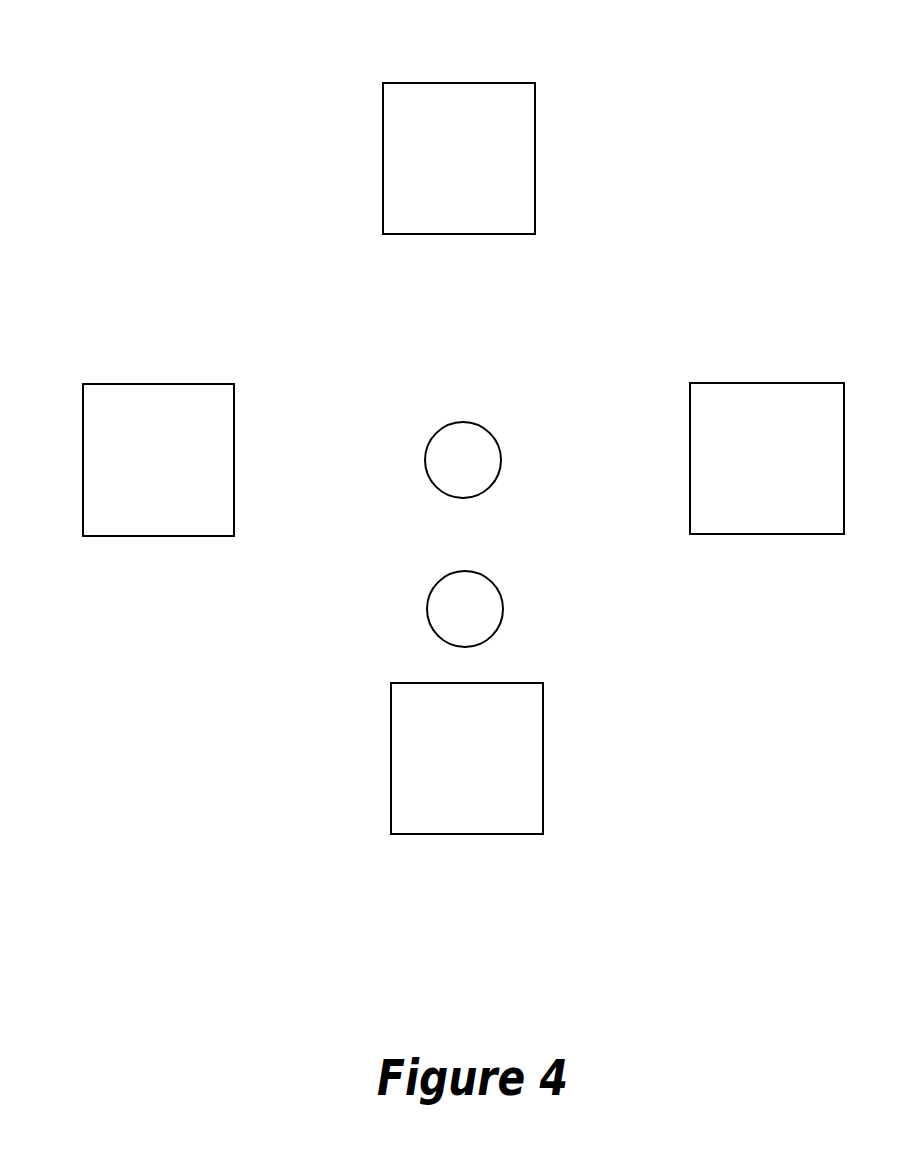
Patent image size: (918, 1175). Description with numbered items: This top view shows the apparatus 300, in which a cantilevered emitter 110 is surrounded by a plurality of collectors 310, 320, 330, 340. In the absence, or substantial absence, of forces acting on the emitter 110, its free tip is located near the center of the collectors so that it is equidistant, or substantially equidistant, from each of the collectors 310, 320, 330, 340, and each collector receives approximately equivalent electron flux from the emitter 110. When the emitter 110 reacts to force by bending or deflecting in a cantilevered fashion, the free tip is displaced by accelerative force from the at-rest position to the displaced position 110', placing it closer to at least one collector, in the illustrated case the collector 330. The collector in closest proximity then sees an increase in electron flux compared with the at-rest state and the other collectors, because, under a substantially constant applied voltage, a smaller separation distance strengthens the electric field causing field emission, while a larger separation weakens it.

The apparatus 300 is at (125, 148).
The collector 310 is at (459, 158).
The collector 320 is at (767, 458).
The collector 330 is at (467, 758).
The collector 340 is at (158, 460).
The emitter 110 is at (574, 534).
The free tip of emitter in displaced position 110' is at (587, 693).